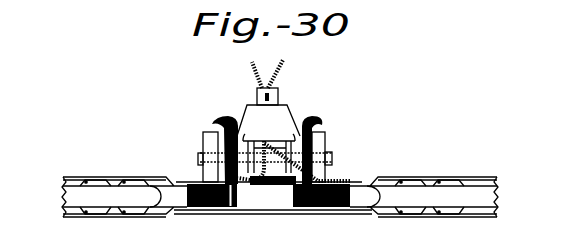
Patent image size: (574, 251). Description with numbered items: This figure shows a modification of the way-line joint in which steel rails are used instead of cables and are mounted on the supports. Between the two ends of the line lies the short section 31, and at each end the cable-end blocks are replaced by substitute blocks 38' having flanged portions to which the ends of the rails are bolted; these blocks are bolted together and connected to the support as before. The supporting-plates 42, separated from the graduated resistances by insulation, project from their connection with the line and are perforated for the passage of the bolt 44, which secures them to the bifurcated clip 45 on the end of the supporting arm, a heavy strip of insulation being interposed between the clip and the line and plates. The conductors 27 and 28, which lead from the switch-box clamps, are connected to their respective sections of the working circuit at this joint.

The wire 27 is at (286, 74).
The wire 28 is at (248, 75).
The short section 31 is at (273, 204).
The substitute block 38' is at (360, 209).
The supporting-plate 42 is at (208, 132).
The bolt 44 is at (199, 157).
The bifurcated clip 45 is at (268, 145).